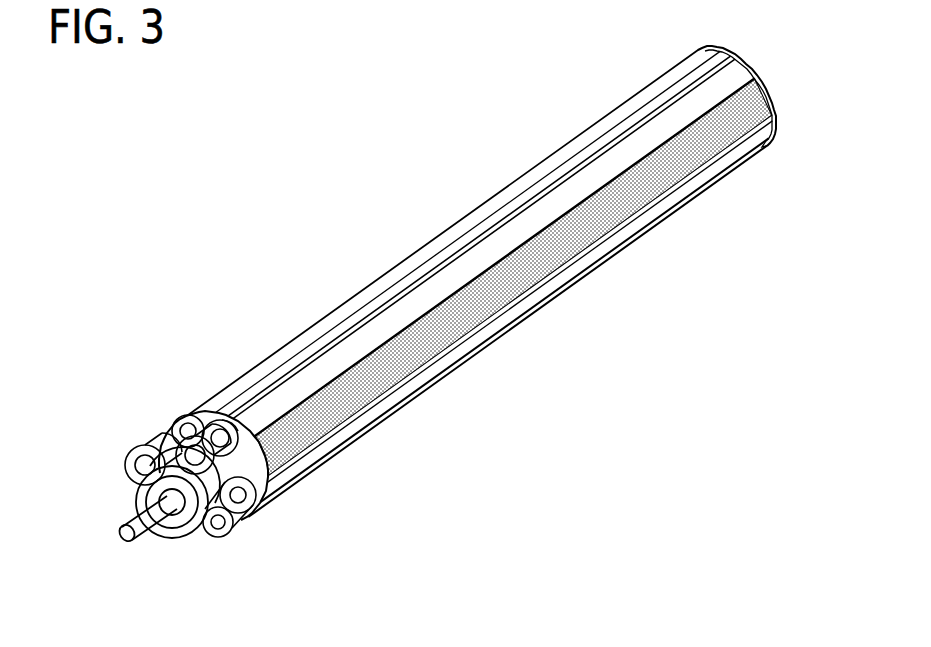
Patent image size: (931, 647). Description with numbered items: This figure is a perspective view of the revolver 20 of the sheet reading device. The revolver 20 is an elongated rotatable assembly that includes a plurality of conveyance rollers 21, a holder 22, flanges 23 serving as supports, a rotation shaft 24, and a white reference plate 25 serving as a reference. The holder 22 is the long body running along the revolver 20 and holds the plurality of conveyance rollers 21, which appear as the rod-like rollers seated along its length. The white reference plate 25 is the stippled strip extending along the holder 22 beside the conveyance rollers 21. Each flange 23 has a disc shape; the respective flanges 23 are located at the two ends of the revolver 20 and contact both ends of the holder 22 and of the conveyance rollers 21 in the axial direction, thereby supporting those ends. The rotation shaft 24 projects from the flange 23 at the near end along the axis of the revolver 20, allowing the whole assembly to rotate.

The revolver 20 is at (345, 258).
The conveyance roller 21 is at (455, 280).
The holder 22 is at (498, 203).
The flange 23 is at (777, 89).
The rotation shaft 24 is at (130, 512).
The white reference plate 25 is at (405, 362).